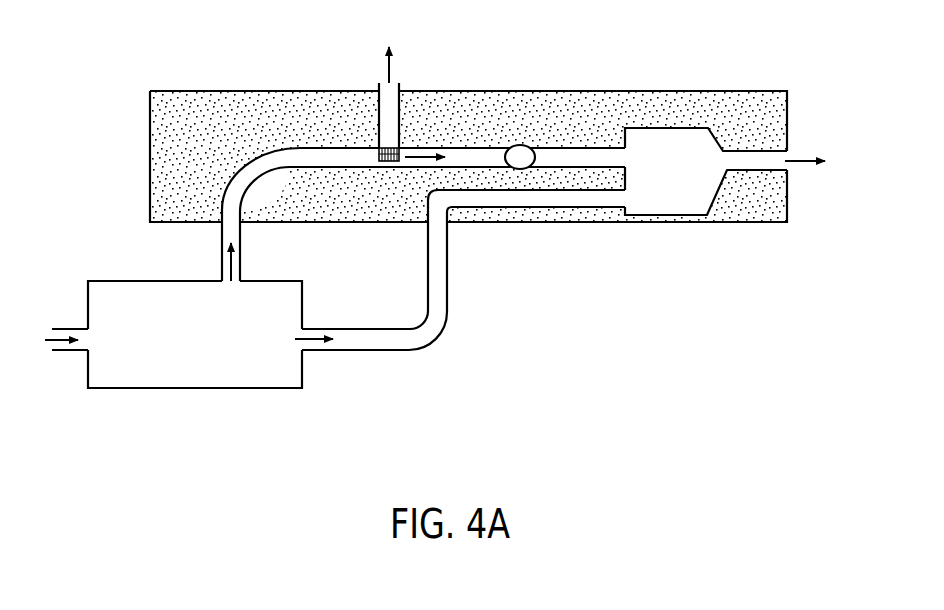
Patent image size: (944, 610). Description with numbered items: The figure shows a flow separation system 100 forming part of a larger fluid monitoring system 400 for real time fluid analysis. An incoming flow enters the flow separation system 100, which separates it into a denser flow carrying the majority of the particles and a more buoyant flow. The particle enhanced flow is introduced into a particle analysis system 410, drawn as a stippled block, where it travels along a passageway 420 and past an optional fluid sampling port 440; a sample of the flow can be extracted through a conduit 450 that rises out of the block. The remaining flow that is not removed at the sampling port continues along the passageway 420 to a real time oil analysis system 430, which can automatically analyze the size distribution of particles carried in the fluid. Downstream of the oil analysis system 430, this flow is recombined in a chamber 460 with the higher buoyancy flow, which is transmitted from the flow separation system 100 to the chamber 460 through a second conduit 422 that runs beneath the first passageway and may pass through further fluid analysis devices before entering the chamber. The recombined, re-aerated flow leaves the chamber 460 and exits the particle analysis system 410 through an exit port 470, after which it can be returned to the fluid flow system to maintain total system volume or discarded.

The flow separation system 100 is at (202, 345).
The fluid monitoring system 400 is at (447, 211).
The particle analysis system 410 is at (777, 113).
The passageway 420 is at (282, 158).
The second fluid channel 422 is at (438, 286).
The real time oil analysis system 430 is at (518, 148).
The fluid sampling port 440 is at (378, 162).
The conduit 450 is at (379, 105).
The chamber 460 is at (685, 183).
The exit port 470 is at (778, 165).